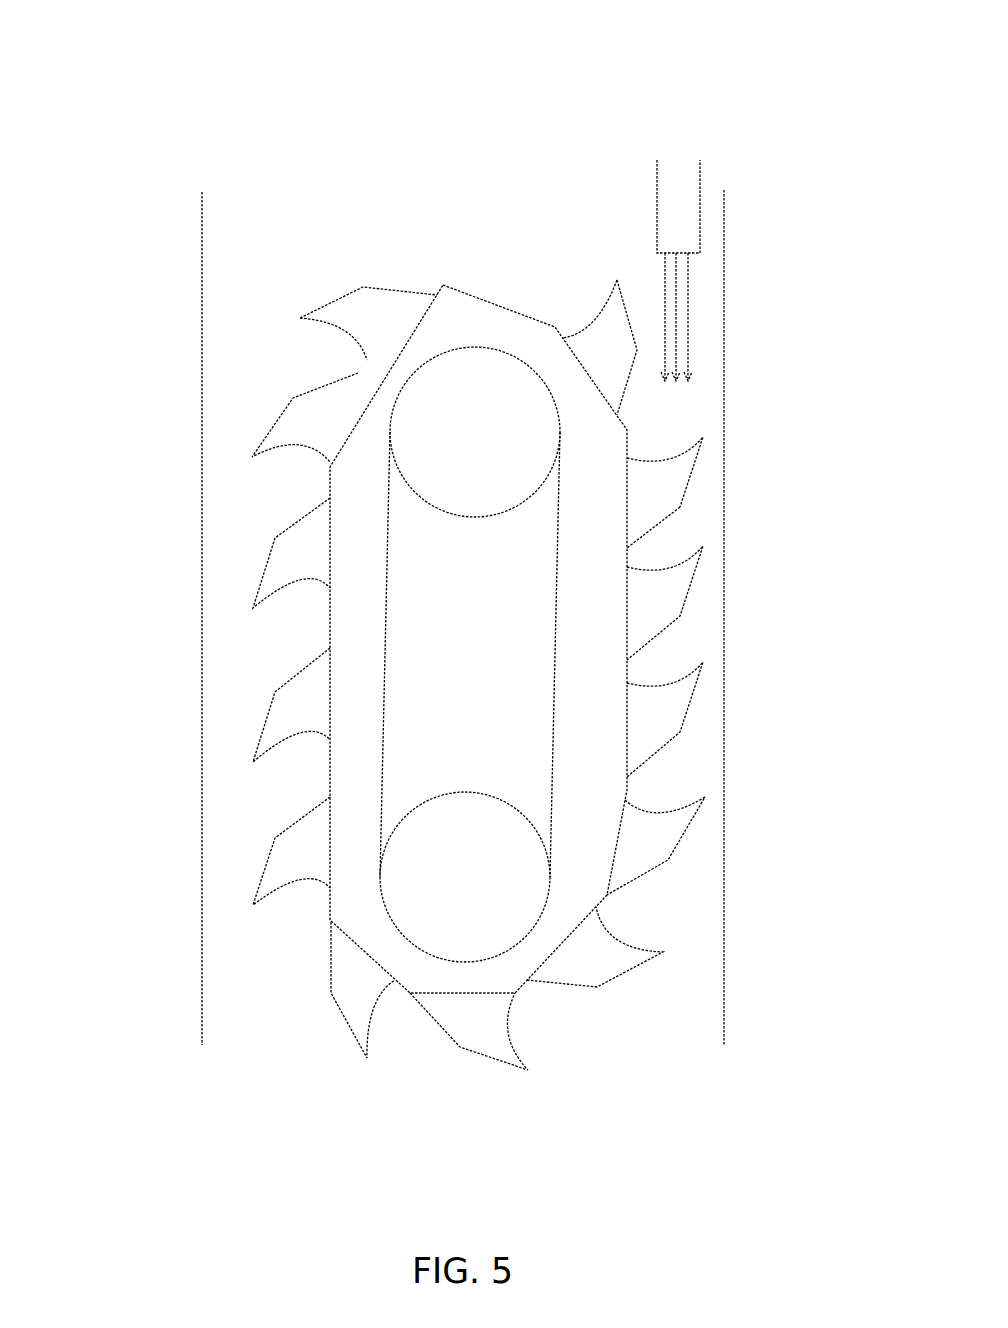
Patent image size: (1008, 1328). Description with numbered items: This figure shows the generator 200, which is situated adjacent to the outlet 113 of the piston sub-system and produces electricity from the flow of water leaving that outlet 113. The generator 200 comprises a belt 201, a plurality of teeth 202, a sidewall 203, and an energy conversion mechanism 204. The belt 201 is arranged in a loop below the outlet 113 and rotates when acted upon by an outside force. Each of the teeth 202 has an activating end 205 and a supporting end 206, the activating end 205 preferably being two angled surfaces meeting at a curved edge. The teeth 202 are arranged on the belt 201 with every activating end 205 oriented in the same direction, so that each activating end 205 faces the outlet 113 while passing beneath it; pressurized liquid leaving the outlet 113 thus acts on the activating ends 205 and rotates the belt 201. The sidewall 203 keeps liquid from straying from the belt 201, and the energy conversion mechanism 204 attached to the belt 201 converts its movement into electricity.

The generator 200 is at (412, 102).
The belt 201 is at (330, 477).
The plurality of teeth 202 is at (397, 290).
The sidewall 203 is at (202, 830).
The energy conversion mechanism 204 is at (402, 388).
The activating end 205 is at (698, 435).
The supporting end 206 is at (648, 530).
The outlet 113 is at (655, 244).